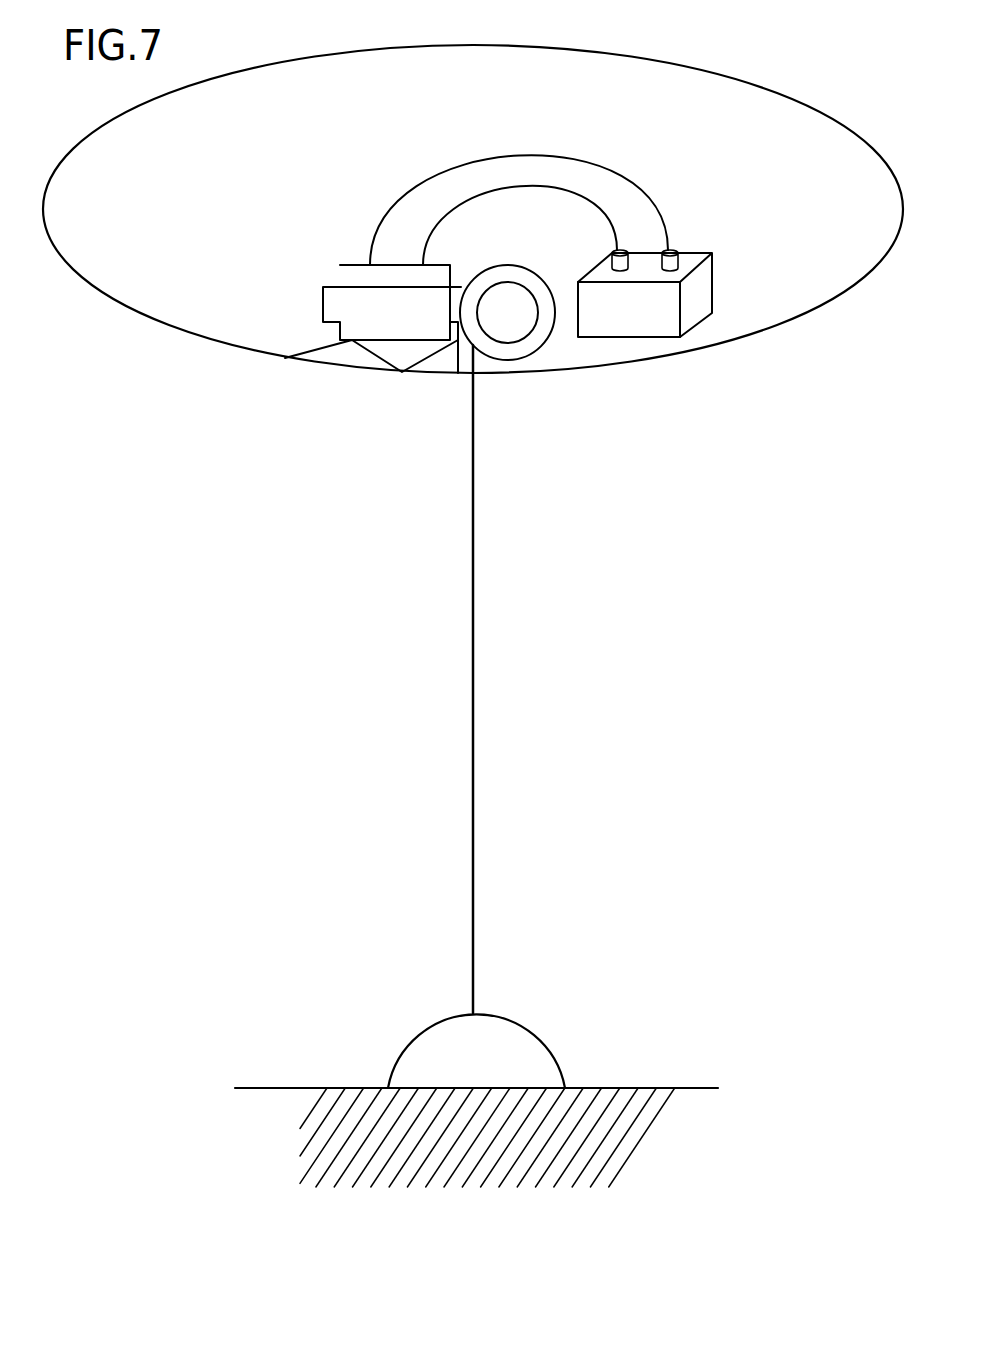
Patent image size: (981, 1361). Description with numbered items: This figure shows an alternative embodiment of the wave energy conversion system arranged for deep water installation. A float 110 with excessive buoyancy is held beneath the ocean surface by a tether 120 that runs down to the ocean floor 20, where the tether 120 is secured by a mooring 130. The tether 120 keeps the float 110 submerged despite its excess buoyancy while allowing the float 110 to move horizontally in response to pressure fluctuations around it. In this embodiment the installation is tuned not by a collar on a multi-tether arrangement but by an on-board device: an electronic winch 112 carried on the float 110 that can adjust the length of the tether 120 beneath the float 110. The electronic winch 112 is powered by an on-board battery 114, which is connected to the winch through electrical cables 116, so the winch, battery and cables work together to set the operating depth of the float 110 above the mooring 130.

The ocean floor 20 is at (277, 1088).
The float 110 is at (187, 337).
The electronic winch 112 is at (355, 267).
The on-board battery 114 is at (710, 272).
The electrical cables 116 is at (578, 208).
The tether 120 is at (473, 618).
The mooring 130 is at (512, 1025).